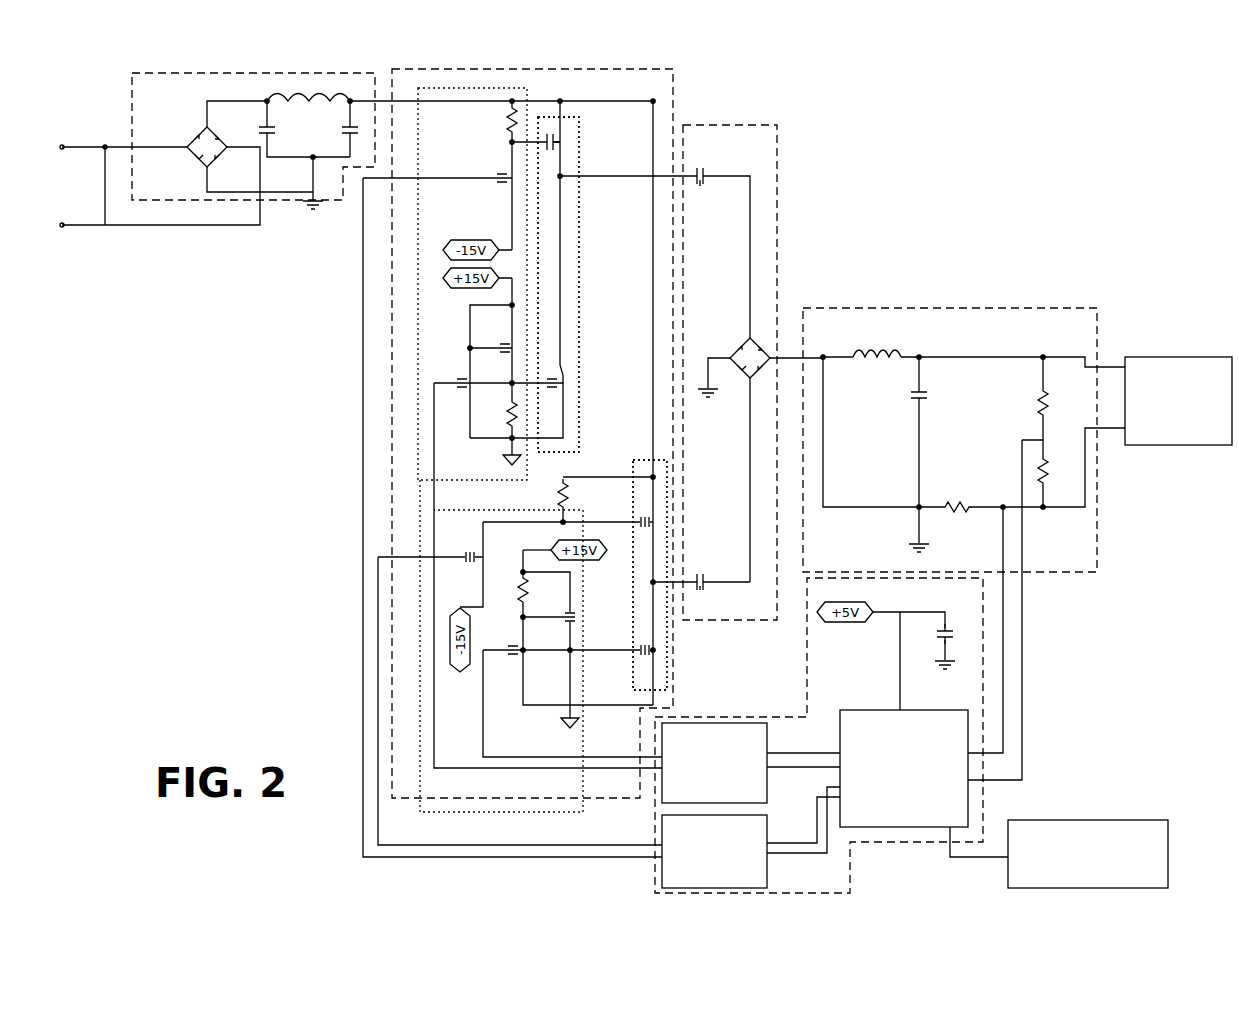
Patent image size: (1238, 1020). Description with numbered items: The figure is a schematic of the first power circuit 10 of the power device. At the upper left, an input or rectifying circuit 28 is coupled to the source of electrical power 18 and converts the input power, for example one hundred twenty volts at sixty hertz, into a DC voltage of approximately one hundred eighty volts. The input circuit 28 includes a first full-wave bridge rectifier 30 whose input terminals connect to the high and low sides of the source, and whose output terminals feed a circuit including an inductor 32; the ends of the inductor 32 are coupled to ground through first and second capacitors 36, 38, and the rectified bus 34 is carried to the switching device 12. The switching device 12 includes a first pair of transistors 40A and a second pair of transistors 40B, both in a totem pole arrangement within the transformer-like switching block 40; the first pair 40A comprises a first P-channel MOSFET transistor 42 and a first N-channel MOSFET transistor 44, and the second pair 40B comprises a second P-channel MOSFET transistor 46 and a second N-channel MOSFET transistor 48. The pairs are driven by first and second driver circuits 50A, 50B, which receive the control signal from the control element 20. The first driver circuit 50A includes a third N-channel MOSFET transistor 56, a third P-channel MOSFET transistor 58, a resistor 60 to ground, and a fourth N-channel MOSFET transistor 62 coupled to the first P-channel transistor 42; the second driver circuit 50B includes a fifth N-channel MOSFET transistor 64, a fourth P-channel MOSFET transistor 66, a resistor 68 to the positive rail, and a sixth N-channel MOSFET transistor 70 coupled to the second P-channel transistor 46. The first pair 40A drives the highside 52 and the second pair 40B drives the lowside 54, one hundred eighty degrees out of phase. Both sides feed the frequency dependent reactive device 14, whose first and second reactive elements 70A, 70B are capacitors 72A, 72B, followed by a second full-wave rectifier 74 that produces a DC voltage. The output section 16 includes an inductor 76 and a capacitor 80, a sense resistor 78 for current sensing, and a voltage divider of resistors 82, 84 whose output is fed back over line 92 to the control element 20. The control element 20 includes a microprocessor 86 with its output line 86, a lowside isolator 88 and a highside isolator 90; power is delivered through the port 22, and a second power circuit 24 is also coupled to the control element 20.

The first power circuit 10 is at (903, 215).
The switching device 12 is at (536, 69).
The frequency dependent reactive device 14 is at (726, 125).
The output section 16 is at (951, 308).
The source of electrical power 18 is at (950, 632).
The control element 20 is at (990, 816).
The power connector or port 22 is at (1186, 356).
The second power circuit 24 is at (1170, 822).
The input or rectifying circuit 28 is at (233, 73).
The first full-wave bridge rectifier 30 is at (192, 141).
The inductor 32 is at (313, 92).
The DC bus line 34 is at (268, 100).
The first capacitor 36 is at (285, 128).
The second capacitor 38 is at (349, 124).
The transformer 40 is at (585, 131).
The first pair of transistors 40A is at (577, 352).
The second pair of transistors 40B is at (666, 473).
The first P-channel MOSFET transistor 42 is at (554, 130).
The first N-channel MOSFET transistor 44 is at (566, 379).
The second P-channel MOSFET transistor 46 is at (656, 520).
The second N-channel MOSFET transistor 48 is at (656, 656).
The first driver circuit 50A is at (418, 336).
The second driver circuit 50B is at (420, 534).
The highside 52 is at (631, 176).
The lowside 54 is at (660, 588).
The third N-channel MOSFET transistor 56 is at (458, 381).
The third P-channel MOSFET transistor 58 is at (500, 354).
The resistor 60 is at (512, 440).
The fourth N-channel MOSFET transistor 62 is at (497, 174).
The fifth N-channel MOSFET transistor 64 is at (513, 658).
The fourth P-channel MOSFET transistor 66 is at (562, 628).
The resistor 68 is at (520, 582).
The transistor 70 is at (476, 551).
The first reactive element 70A is at (706, 186).
The second reactive element 70B is at (717, 590).
The capacitor 72A is at (706, 173).
The capacitor 72B is at (702, 575).
The second full-wave rectifier 74 is at (748, 338).
The inductor 76 is at (900, 356).
The sense resistor 78 is at (950, 505).
The capacitor 80 is at (921, 370).
The resistor 82 is at (1042, 383).
The resistor 84 is at (1045, 458).
The microprocessor 86 is at (878, 830).
The lowside isolator 88 is at (770, 753).
The highside isolator 90 is at (768, 824).
The feedback line 92 is at (1003, 505).